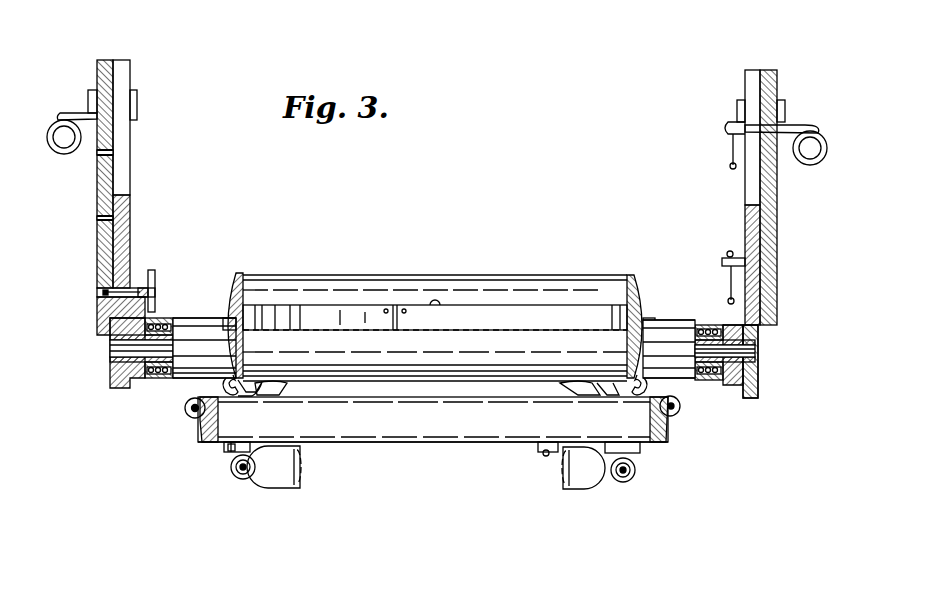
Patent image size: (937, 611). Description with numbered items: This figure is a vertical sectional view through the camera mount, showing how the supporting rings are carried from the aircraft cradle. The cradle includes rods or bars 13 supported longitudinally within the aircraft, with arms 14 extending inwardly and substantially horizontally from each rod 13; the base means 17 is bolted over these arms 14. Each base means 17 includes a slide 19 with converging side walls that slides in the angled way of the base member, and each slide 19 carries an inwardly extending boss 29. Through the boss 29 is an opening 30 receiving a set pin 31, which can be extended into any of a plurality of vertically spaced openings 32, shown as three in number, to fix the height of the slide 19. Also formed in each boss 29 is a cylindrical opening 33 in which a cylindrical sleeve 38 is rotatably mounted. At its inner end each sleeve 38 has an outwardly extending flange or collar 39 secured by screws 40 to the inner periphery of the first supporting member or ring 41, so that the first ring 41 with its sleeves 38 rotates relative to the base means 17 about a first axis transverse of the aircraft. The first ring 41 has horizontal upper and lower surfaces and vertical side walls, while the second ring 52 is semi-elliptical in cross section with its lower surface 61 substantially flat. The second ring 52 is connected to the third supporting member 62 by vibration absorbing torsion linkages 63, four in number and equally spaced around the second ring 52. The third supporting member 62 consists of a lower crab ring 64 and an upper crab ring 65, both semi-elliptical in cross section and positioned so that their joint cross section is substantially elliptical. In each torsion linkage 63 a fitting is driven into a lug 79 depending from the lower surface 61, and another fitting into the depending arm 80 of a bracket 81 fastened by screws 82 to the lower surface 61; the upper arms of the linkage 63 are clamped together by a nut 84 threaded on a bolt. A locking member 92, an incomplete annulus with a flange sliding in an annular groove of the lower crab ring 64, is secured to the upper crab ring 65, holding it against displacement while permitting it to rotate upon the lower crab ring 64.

The rods or bars 13 is at (67, 158).
The arms 14 is at (805, 133).
The foundation or base means 17 is at (136, 74).
The slide 19 is at (130, 215).
The boss 29 is at (135, 388).
The opening 30 is at (115, 290).
The set pin 31 is at (148, 296).
The vertically spaced openings 32 is at (97, 312).
The cylindrical opening 33 is at (110, 350).
The cylindrical sleeve 38 is at (755, 346).
The flange or collar 39 is at (700, 322).
The screws 40 is at (694, 335).
The first supporting member or ring 41 is at (157, 392).
The second ring 52 is at (668, 430).
The lower surface 61 is at (650, 443).
The third supporting member 62 is at (511, 272).
The torsion linkages 63 is at (264, 480).
The lower crab ring 64 is at (470, 360).
The upper crab ring 65 is at (370, 280).
The lug 79 is at (630, 480).
The depending arm 80 is at (245, 473).
The bracket 81 is at (229, 445).
The screws 82 is at (237, 452).
The nut 84 is at (650, 385).
The locking member 92 is at (487, 310).